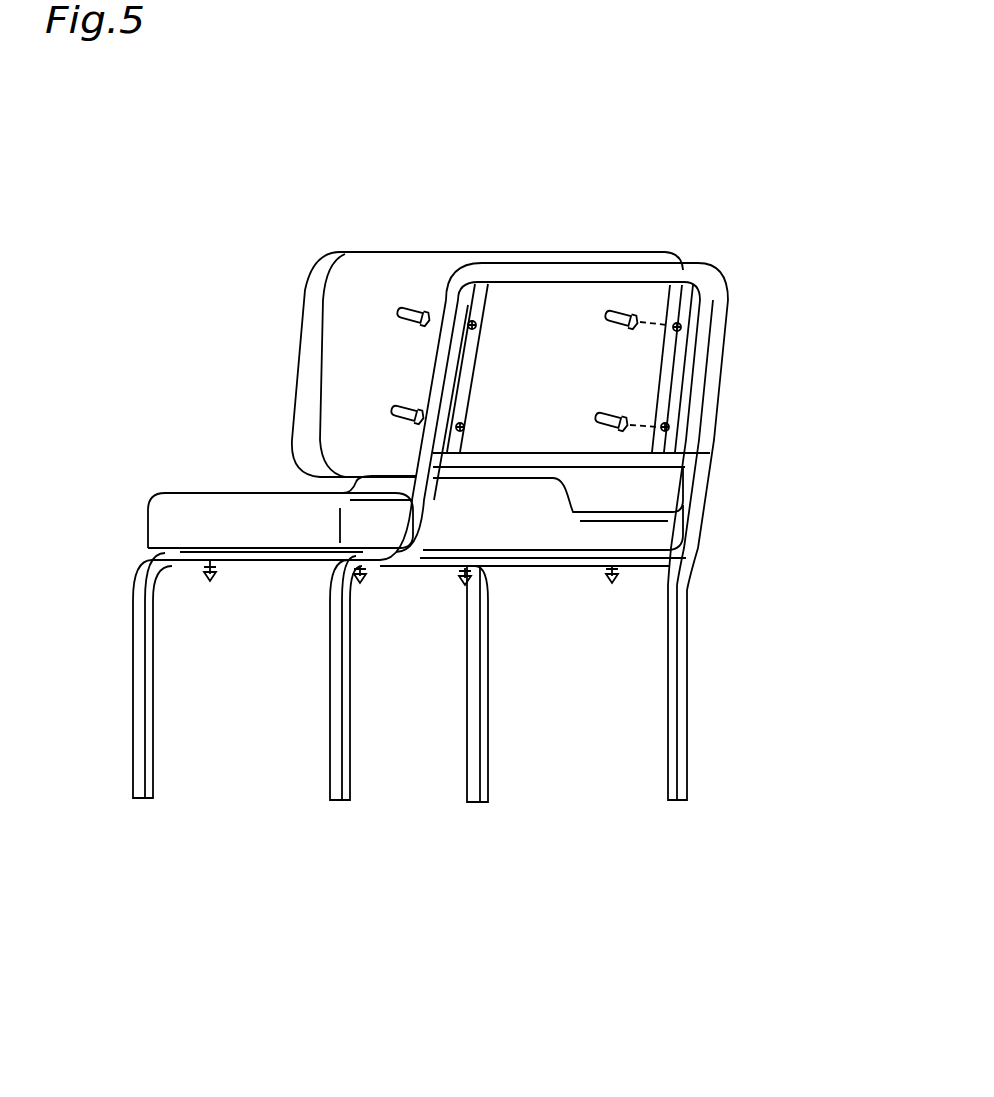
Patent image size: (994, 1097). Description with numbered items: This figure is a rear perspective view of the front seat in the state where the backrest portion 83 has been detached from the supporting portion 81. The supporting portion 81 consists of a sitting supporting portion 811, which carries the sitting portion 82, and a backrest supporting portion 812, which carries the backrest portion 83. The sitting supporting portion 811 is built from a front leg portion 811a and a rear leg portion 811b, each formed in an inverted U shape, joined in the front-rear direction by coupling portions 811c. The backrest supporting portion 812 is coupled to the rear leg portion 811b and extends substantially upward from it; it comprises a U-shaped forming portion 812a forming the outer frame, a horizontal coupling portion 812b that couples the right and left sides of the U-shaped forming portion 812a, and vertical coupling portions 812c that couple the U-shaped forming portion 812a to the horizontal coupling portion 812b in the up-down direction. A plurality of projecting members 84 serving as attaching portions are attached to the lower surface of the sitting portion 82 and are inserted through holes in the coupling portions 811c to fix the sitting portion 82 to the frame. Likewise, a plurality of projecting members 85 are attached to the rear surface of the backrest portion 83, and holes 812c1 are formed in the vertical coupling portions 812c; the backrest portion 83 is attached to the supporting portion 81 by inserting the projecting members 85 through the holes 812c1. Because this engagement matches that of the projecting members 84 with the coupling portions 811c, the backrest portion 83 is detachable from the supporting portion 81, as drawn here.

The supporting portion 81 is at (108, 810).
The sitting supporting portion 811 is at (116, 681).
The front leg portion 811a is at (150, 765).
The rear leg portion 811b is at (337, 760).
The coupling portion 811c is at (283, 553).
The backrest supporting portion 812 is at (601, 238).
The U-shaped forming portion 812a is at (641, 270).
The horizontal coupling portion 812b is at (637, 462).
The vertical coupling portion 812c is at (477, 300).
The hole 812c1 is at (462, 426).
The sitting portion 82 is at (145, 472).
The backrest portion 83 is at (314, 217).
The projecting member 84 is at (208, 582).
The projecting member 85 is at (622, 312).